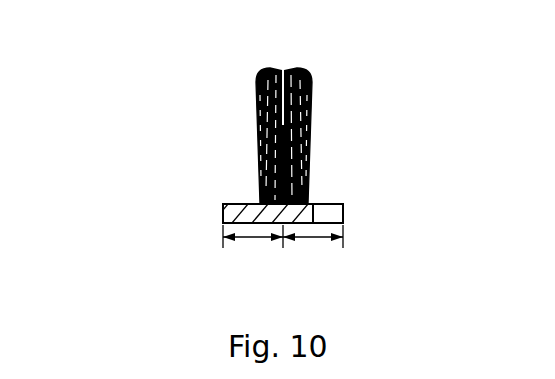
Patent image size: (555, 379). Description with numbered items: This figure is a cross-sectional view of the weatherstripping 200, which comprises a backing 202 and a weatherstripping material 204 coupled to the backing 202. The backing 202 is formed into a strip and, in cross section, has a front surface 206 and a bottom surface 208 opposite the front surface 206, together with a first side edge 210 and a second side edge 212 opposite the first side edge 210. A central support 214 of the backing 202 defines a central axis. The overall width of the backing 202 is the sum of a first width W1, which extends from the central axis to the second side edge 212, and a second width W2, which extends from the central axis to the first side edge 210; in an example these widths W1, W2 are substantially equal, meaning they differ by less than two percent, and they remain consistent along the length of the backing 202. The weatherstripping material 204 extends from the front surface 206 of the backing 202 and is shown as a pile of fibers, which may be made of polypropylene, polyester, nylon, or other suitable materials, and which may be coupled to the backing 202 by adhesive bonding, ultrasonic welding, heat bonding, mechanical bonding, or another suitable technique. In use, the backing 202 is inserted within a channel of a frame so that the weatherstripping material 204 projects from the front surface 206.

The weatherstripping 200 is at (130, 80).
The backing 202 is at (195, 238).
The weatherstripping material 204 is at (312, 113).
The front surface 206 is at (240, 203).
The bottom surface 208 is at (343, 222).
The first side edge 210 is at (343, 210).
The second side edge 212 is at (222, 206).
The central support 214 is at (250, 213).
The first width W1 is at (255, 238).
The second width W2 is at (313, 238).